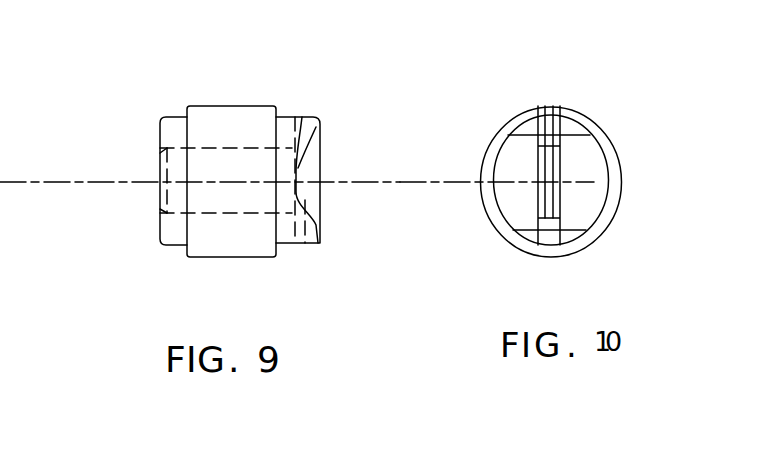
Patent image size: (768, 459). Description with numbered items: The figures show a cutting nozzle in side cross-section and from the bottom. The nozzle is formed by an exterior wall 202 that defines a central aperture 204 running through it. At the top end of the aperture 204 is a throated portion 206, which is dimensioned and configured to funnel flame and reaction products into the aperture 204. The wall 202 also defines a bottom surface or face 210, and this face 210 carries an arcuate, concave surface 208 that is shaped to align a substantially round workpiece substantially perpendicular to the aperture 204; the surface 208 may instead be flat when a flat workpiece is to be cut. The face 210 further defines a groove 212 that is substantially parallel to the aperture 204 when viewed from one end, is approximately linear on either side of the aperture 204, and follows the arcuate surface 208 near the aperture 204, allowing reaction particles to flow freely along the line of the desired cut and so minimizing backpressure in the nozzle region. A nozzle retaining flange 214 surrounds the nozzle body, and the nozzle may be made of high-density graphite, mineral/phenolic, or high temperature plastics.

In FIG. 9, the exterior wall 202 is at (173, 245).
In FIG. 10, the exterior wall 202 is at (501, 205).
In FIG. 10, the aperture 204 is at (546, 158).
In FIG. 9, the throated portion 206 is at (158, 151).
In FIG. 9, the arcuate concave surface 208 is at (313, 140).
In FIG. 10, the arcuate concave surface 208 is at (588, 160).
In FIG. 9, the bottom face 210 is at (320, 118).
In FIG. 10, the bottom face 210 is at (588, 197).
In FIG. 10, the groove 212 is at (559, 127).
In FIG. 9, the nozzle retaining flange 214 is at (225, 116).
In FIG. 10, the nozzle retaining flange 214 is at (607, 124).